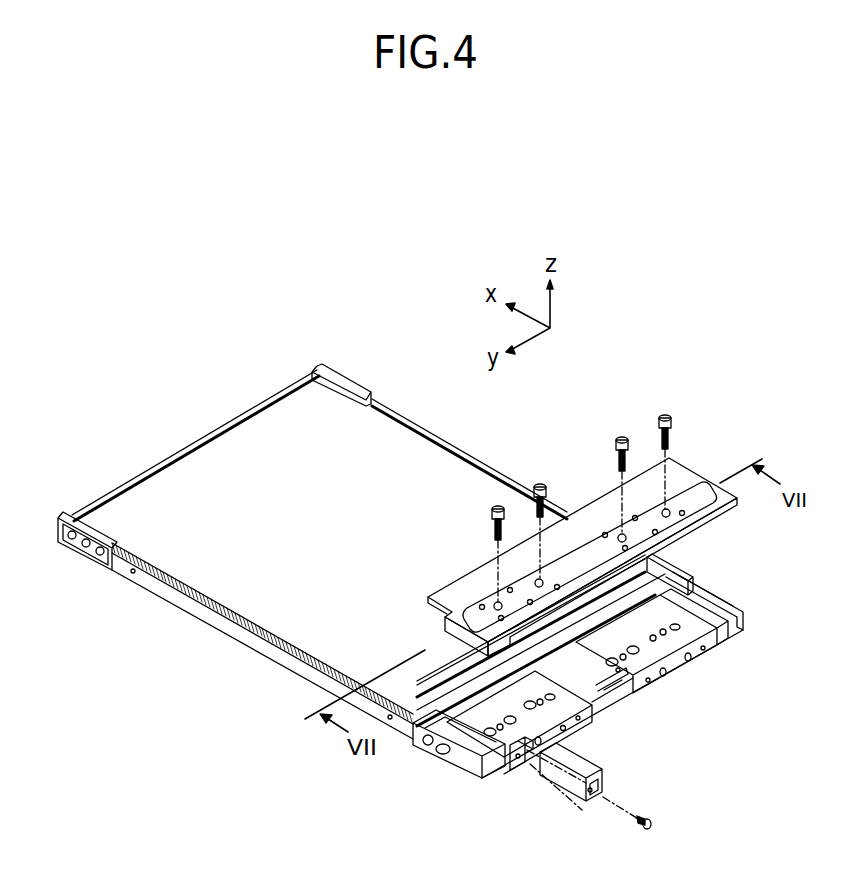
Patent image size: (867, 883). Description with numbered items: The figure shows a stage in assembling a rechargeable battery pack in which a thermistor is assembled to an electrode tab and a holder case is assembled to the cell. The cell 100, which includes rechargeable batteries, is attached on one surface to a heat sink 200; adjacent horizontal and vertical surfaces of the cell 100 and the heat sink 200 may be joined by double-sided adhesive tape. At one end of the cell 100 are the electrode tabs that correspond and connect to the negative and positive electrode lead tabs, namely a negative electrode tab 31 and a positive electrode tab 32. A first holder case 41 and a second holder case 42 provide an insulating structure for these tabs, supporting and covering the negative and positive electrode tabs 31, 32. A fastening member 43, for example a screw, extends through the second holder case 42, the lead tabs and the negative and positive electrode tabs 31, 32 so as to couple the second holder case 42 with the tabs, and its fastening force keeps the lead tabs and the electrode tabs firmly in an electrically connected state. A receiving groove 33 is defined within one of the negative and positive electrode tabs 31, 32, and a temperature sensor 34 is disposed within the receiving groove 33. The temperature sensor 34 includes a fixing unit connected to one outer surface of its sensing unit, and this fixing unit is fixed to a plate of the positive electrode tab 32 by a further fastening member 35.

The cell 100 is at (227, 457).
The heat sink 200 is at (153, 580).
The negative electrode tab 31 is at (683, 665).
The positive electrode tab 32 is at (578, 726).
The receiving groove 33 is at (535, 757).
The temperature sensor 34 is at (612, 785).
The fastening member 35 is at (650, 826).
The first holder case 41 is at (708, 603).
The second holder case 42 is at (670, 480).
The fastening member 43 is at (661, 416).